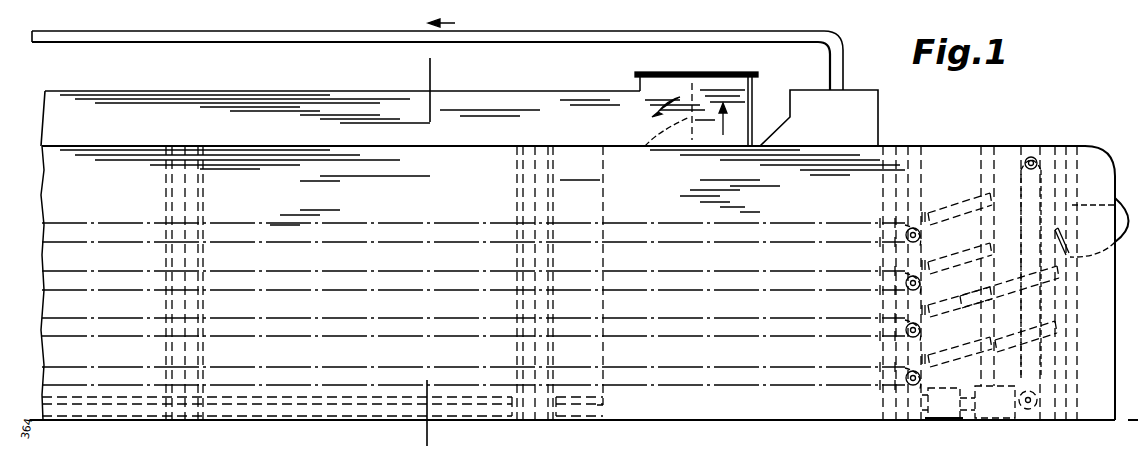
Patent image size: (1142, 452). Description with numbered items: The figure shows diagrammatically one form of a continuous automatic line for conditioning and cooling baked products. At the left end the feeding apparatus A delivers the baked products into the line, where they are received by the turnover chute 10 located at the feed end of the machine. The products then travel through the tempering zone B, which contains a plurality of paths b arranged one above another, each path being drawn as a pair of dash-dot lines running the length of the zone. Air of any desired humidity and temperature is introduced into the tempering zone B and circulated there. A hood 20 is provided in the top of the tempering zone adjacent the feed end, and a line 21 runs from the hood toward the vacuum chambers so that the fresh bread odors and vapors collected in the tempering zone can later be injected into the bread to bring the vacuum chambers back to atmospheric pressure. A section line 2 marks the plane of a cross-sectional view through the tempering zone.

The section line 2- 2 is at (438, 70).
The turnover chute 10 is at (1115, 204).
The hood 20 is at (854, 105).
The line 21 is at (582, 44).
The feeding apparatus A is at (584, 276).
The tempering zone B is at (340, 140).
The paths b is at (578, 287).